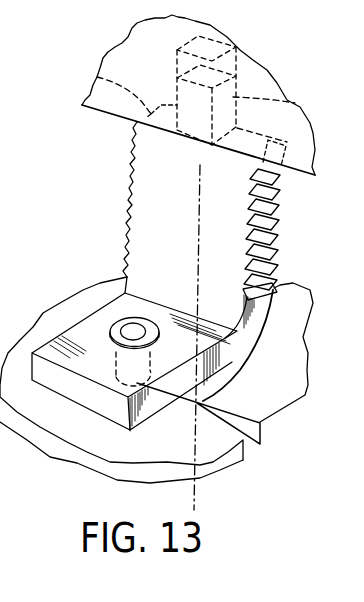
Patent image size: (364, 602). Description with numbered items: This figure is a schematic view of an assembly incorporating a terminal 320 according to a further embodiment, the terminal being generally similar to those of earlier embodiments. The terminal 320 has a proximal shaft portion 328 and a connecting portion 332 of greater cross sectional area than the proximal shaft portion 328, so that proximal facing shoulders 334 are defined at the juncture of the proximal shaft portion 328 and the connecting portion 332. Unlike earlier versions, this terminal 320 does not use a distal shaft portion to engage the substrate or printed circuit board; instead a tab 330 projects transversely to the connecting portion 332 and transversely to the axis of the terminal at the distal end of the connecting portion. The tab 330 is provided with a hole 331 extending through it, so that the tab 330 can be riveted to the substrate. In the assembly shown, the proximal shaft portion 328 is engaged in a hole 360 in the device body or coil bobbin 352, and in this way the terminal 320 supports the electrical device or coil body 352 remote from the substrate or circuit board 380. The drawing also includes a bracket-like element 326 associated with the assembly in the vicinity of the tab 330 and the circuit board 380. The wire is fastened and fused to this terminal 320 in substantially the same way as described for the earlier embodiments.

The terminal 320 is at (288, 215).
The bracket 326 is at (200, 420).
The proximal shaft portion 328 is at (295, 103).
The tab 330 is at (101, 411).
The hole 331 is at (181, 319).
The connecting portion 332 is at (278, 241).
The proximal facing shoulders 334 is at (97, 77).
The coil body 352 is at (262, 81).
The hole 360 is at (241, 51).
The circuit board 380 is at (315, 393).